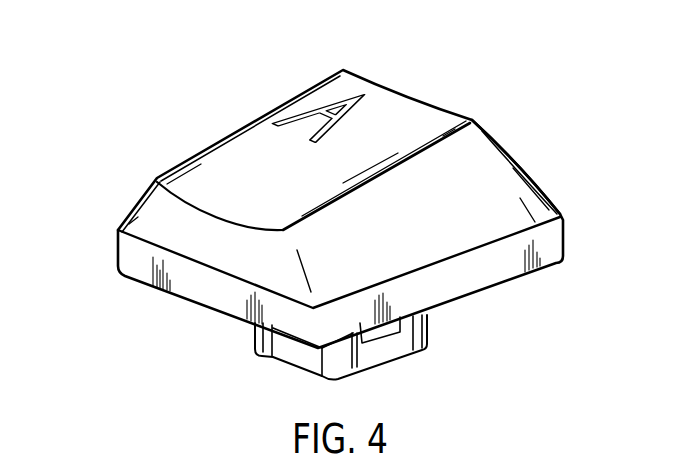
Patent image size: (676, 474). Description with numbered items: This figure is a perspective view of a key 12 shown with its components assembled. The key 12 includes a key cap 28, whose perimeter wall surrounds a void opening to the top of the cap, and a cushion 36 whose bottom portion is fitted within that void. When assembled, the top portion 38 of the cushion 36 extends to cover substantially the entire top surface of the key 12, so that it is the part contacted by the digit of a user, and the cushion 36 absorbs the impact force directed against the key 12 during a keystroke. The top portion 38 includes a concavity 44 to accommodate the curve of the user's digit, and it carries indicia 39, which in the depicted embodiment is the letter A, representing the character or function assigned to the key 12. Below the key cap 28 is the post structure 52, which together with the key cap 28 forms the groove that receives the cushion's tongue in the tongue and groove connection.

The key 12 is at (79, 106).
The key cap 28 is at (556, 159).
The cushion 36 is at (225, 128).
The top portion 38 is at (247, 157).
The indicia 39 is at (323, 104).
The concavity 44 is at (389, 105).
The post structure 52 is at (109, 250).